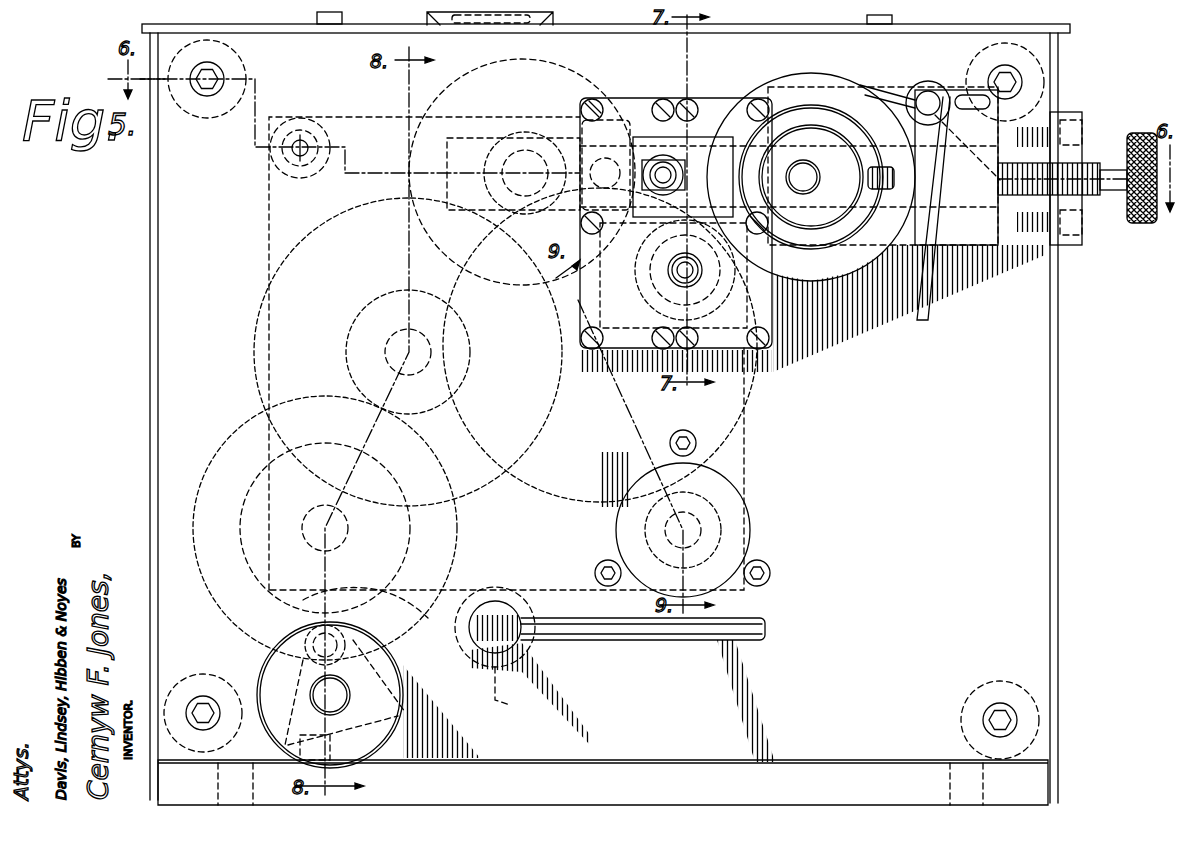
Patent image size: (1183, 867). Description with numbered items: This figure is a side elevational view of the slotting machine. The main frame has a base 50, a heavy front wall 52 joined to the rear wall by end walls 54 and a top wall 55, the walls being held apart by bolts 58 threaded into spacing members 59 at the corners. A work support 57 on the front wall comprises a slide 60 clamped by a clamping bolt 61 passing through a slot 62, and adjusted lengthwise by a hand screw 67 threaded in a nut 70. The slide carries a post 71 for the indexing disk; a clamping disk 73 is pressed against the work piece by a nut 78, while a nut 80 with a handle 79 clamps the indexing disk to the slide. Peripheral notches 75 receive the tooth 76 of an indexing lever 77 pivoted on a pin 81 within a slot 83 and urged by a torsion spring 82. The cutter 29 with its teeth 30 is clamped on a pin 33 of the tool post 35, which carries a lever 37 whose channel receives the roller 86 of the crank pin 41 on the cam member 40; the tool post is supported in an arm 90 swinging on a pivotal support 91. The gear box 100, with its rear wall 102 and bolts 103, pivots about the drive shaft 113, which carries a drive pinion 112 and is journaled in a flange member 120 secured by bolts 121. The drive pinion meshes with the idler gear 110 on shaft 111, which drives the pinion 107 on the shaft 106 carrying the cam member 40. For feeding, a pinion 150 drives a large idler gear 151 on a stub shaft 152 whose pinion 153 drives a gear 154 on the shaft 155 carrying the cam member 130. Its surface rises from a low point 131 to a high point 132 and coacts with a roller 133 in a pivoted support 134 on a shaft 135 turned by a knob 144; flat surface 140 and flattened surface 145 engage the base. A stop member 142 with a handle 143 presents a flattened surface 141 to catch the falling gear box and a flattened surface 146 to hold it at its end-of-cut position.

The cutter 29 is at (683, 262).
The teeth 30 is at (668, 165).
The pin 33 is at (660, 170).
The tool post 35 is at (690, 160).
The lever 37 is at (462, 160).
The cam member 40 is at (585, 95).
The crank pin 41 is at (578, 118).
The base 50 is at (705, 772).
The front wall 52 is at (1012, 437).
The end walls 54 is at (150, 355).
The top wall 55 is at (940, 85).
The work support 57 is at (864, 272).
The bolts 58 is at (207, 82).
The spacing members 59 is at (237, 105).
The slide 60 is at (985, 240).
The clamping bolt 61 is at (888, 160).
The slot 62 is at (945, 170).
The hand screw 67 is at (1100, 195).
The nut 70 is at (1068, 245).
The post 71 is at (803, 192).
The clamping disk 73 is at (822, 272).
The peripheral notches 75 is at (770, 300).
The tooth 76 is at (932, 188).
The indexing lever 77 is at (928, 308).
The nut 78 is at (850, 225).
The handle 79 is at (868, 178).
The nut 80 is at (840, 222).
The pin 81 is at (926, 100).
The torsion spring 82 is at (900, 90).
The slot 83 is at (960, 97).
The roller 86 is at (590, 140).
The arm 90 is at (673, 275).
The pivotal support 91 is at (648, 285).
The gear box 100 is at (750, 453).
The rear wall 102 is at (318, 128).
The bolts 103 is at (300, 140).
The shaft 106 is at (440, 230).
The pinion 107 is at (410, 173).
The idler gear 110 is at (580, 505).
The shaft 111 is at (612, 400).
The drive pinion 112 is at (722, 508).
The drive shaft 113 is at (712, 530).
The flange member 120 is at (725, 578).
The bolts 121 is at (771, 573).
The cam member 130 is at (213, 448).
The low point 131 is at (345, 598).
The high point 132 is at (325, 592).
The roller 133 is at (368, 645).
The pivoted support 134 is at (406, 672).
The shaft 135 is at (343, 700).
The flat surface 140 is at (412, 705).
The flattened surface 141 is at (480, 600).
The stop member 142 is at (526, 600).
The handle 143 is at (587, 632).
The knob 144 is at (385, 735).
The flattened surface 145 is at (315, 743).
The flattened surface 146 is at (500, 704).
The pinion 150 is at (545, 437).
The idler gear 151 is at (252, 334).
The stub shaft 152 is at (380, 292).
The pinion 153 is at (348, 338).
The gear 154 is at (240, 413).
The shaft 155 is at (313, 514).